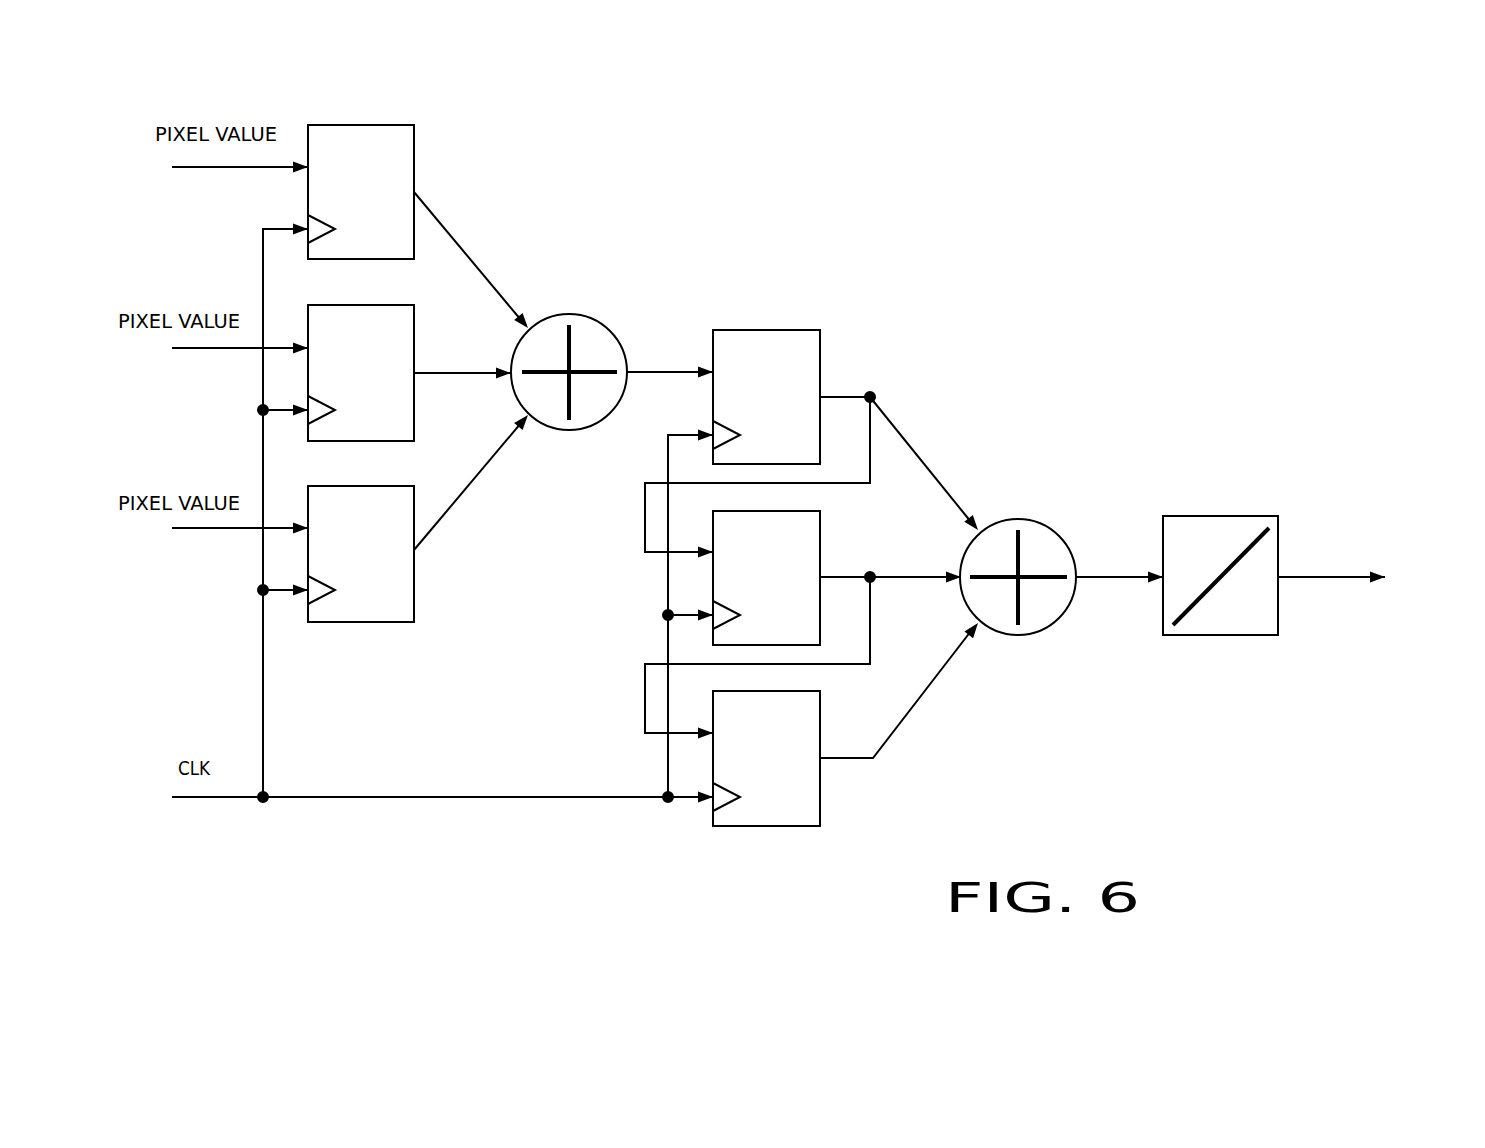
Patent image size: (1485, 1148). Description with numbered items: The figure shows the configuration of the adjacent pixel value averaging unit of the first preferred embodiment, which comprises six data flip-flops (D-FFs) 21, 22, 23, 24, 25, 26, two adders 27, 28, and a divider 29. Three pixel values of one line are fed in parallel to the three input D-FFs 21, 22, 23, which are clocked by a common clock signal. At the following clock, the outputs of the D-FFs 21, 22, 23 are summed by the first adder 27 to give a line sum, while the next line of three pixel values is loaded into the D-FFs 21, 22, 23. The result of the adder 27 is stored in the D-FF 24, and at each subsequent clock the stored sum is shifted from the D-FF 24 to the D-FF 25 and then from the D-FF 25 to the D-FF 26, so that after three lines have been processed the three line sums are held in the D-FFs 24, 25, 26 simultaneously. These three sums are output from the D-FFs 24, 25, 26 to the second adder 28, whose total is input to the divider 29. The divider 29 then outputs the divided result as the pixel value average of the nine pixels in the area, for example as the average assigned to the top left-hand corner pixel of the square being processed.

The data flip-flop 21 is at (360, 125).
The data flip-flop 22 is at (414, 340).
The data flip-flop 23 is at (360, 622).
The data flip-flop 24 is at (763, 330).
The data flip-flop 25 is at (820, 548).
The data flip-flop 26 is at (765, 826).
The adder 27 is at (569, 430).
The adder 28 is at (1018, 635).
The divider 29 is at (1220, 635).